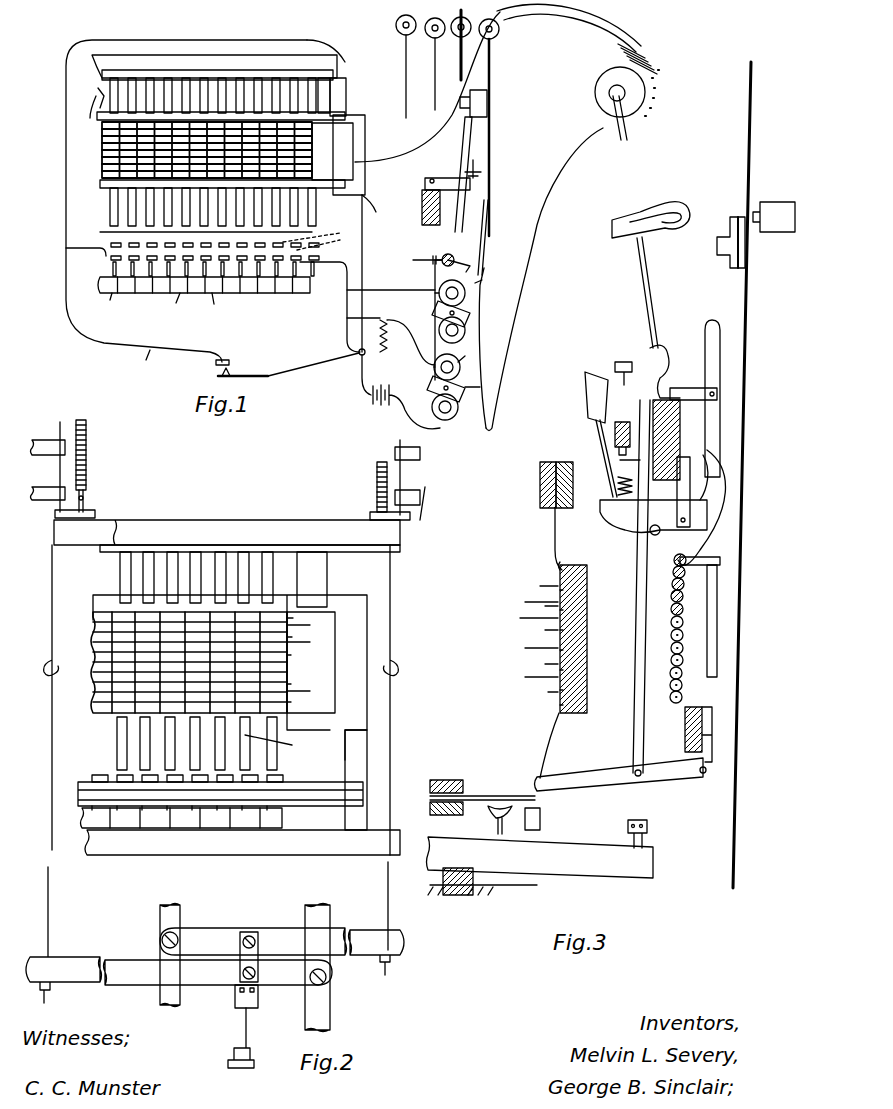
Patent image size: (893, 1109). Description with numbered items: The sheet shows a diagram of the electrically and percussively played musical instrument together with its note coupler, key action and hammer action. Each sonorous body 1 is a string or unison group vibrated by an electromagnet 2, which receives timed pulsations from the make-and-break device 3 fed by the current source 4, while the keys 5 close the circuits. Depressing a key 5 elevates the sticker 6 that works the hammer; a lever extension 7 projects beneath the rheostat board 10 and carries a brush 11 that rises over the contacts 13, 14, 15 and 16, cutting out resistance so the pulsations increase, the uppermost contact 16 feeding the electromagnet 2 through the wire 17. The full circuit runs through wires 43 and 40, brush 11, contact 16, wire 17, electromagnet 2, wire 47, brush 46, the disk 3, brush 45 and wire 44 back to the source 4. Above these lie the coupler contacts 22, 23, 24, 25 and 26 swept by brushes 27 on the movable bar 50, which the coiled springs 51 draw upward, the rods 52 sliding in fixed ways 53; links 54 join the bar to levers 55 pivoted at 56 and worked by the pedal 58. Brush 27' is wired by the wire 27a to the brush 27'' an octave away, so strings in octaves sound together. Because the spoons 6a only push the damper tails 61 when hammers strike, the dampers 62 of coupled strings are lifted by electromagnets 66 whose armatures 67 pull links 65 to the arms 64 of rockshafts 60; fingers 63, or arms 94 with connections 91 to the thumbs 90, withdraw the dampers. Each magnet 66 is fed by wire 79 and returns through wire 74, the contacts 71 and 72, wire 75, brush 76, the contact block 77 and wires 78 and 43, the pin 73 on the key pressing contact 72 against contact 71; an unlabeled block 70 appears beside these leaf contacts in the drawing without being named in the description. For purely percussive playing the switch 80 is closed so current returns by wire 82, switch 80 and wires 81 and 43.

In FIG. 1, the sonorous body 1 is at (430, 66).
In FIG. 3, the sonorous body 1 is at (752, 140).
In FIG. 1, the electromagnet 2 is at (438, 40).
In FIG. 3, the electromagnet 2 is at (776, 232).
In FIG. 1, the make-and-break device 3 is at (595, 88).
In FIG. 1, the current source 4 is at (372, 405).
In FIG. 1, the key 5 is at (256, 303).
In FIG. 2, the key 5 is at (283, 822).
In FIG. 3, the key 5 is at (618, 877).
In FIG. 3, the sticker 6 is at (640, 672).
In FIG. 3, the spoon 6a is at (705, 490).
In FIG. 3, the lever extension 7 is at (600, 786).
In FIG. 1, the rheostat board 10 is at (348, 180).
In FIG. 2, the rheostat board 10 is at (325, 728).
In FIG. 3, the rheostat board 10 is at (587, 713).
In FIG. 1, the brush 11 is at (300, 212).
In FIG. 2, the brush 11 is at (213, 743).
In FIG. 3, the brush 11 is at (548, 746).
In FIG. 2, the lowermost contact 13 is at (299, 703).
In FIG. 3, the lowermost contact 13 is at (542, 692).
In FIG. 2, the contact 14 is at (309, 693).
In FIG. 3, the contact 14 is at (530, 676).
In FIG. 2, the contact 15 is at (299, 684).
In FIG. 3, the contact 15 is at (544, 663).
In FIG. 1, the uppermost contact 16 is at (112, 152).
In FIG. 2, the uppermost contact 16 is at (287, 667).
In FIG. 3, the uppermost contact 16 is at (530, 648).
In FIG. 1, the wire 17 is at (415, 155).
In FIG. 2, the contact 22 is at (299, 655).
In FIG. 3, the contact 22 is at (544, 631).
In FIG. 2, the contact 23 is at (309, 645).
In FIG. 3, the contact 23 is at (527, 619).
In FIG. 2, the contact 24 is at (299, 637).
In FIG. 3, the contact 24 is at (544, 608).
In FIG. 2, the contact 25 is at (309, 627).
In FIG. 3, the contact 25 is at (530, 603).
In FIG. 2, the contact 26 is at (300, 617).
In FIG. 3, the contact 26 is at (542, 587).
In FIG. 1, the brush 27 is at (213, 65).
In FIG. 2, the brush 27 is at (218, 577).
In FIG. 3, the brush 27 is at (541, 539).
In FIG. 1, the wire 27a is at (216, 70).
In FIG. 2, the wire 27a is at (278, 552).
In FIG. 1, the brush 27' is at (335, 74).
In FIG. 2, the brush 27' is at (298, 579).
In FIG. 1, the brush 27'' is at (205, 106).
In FIG. 1, the wire 40 is at (350, 264).
In FIG. 1, the wire 43 is at (355, 390).
In FIG. 1, the wire 44 is at (510, 336).
In FIG. 1, the brush 45 is at (628, 131).
In FIG. 1, the brush 46 is at (655, 42).
In FIG. 1, the wire 47 is at (577, 20).
In FIG. 1, the movable bar 50 is at (266, 55).
In FIG. 2, the movable bar 50 is at (345, 520).
In FIG. 3, the movable bar 50 is at (550, 462).
In FIG. 2, the coiled spring 51 is at (87, 452).
In FIG. 2, the rod 52 is at (58, 470).
In FIG. 2, the fixed way 53 is at (432, 487).
In FIG. 2, the link 54 is at (395, 744).
In FIG. 2, the lever 55 is at (275, 928).
In FIG. 2, the pivot 56 is at (160, 935).
In FIG. 2, the pedal 58 is at (252, 1052).
In FIG. 1, the rockshaft 60 is at (449, 250).
In FIG. 3, the rockshaft 60 is at (683, 622).
In FIG. 1, the damper tail 61 is at (465, 215).
In FIG. 3, the damper tail 61 is at (722, 412).
In FIG. 1, the damper 62 is at (487, 102).
In FIG. 3, the damper 62 is at (746, 258).
In FIG. 3, the finger 63 is at (722, 513).
In FIG. 1, the arm 64 is at (425, 249).
In FIG. 3, the arm 64 is at (722, 561).
In FIG. 1, the link 65 is at (433, 276).
In FIG. 1, the electromagnet 66 is at (469, 350).
In FIG. 1, the armature 67 is at (466, 300).
In FIG. 2, the block 70 is at (324, 806).
In FIG. 3, the block 70 is at (463, 786).
In FIG. 1, the contact 71 is at (233, 234).
In FIG. 2, the contact 71 is at (283, 778).
In FIG. 3, the contact 71 is at (500, 780).
In FIG. 1, the contact 72 is at (110, 258).
In FIG. 3, the contact 72 is at (488, 815).
In FIG. 3, the pin 73 is at (508, 838).
In FIG. 1, the wire 74 is at (372, 299).
In FIG. 1, the wire 75 is at (180, 42).
In FIG. 1, the brush 76 is at (346, 97).
In FIG. 2, the brush 76 is at (328, 570).
In FIG. 1, the contact block 77 is at (345, 152).
In FIG. 2, the contact block 77 is at (335, 688).
In FIG. 1, the wire 78 is at (372, 213).
In FIG. 1, the wire 79 is at (485, 400).
In FIG. 1, the switch 80 is at (242, 363).
In FIG. 1, the wire 81 is at (302, 370).
In FIG. 1, the wire 82 is at (145, 359).
In FIG. 1, the thumb 90 is at (482, 173).
In FIG. 1, the connection 91 is at (484, 229).
In FIG. 1, the arm 94 is at (470, 262).